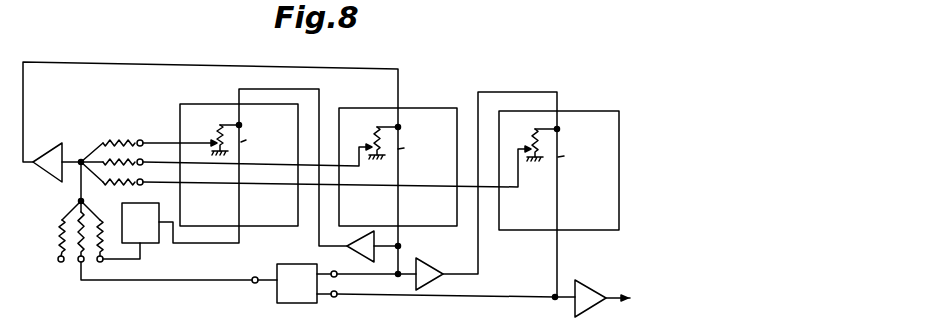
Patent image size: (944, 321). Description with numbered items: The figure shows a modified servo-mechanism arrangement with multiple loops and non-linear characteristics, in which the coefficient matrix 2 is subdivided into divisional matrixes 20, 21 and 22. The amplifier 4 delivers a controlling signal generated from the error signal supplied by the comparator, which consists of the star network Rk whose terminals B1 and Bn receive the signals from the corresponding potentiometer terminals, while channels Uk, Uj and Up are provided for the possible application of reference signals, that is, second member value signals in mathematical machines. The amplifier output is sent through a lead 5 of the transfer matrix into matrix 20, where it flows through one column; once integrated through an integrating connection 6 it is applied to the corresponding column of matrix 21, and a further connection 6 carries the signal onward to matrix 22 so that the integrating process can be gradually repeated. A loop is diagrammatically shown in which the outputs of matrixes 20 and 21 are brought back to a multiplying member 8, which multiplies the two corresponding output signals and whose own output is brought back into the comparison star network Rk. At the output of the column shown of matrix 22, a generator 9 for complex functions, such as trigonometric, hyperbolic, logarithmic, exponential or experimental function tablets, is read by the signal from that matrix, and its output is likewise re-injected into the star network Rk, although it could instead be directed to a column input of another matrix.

The coefficient matrix 2 is at (399, 156).
The matrix 2_2 22 is at (207, 112).
The matrix 2_0 20 is at (359, 113).
The matrix 2_1 21 is at (588, 118).
The amplifier 4 is at (57, 155).
The lead of the transfer matrix 5 is at (210, 158).
The integrating connection 6 is at (449, 194).
The multiplying member 8 is at (426, 283).
The generator for complex functions 9 is at (234, 167).
The terminal B1 is at (149, 141).
The terminal Bn is at (306, 175).
The comparison star network Rk is at (226, 174).
The reference signal channel Uk is at (54, 231).
The reference signal channel Uj is at (75, 264).
The reference signal channel Up is at (110, 240).